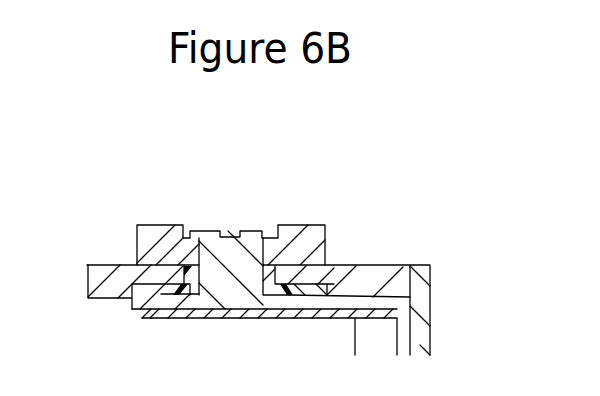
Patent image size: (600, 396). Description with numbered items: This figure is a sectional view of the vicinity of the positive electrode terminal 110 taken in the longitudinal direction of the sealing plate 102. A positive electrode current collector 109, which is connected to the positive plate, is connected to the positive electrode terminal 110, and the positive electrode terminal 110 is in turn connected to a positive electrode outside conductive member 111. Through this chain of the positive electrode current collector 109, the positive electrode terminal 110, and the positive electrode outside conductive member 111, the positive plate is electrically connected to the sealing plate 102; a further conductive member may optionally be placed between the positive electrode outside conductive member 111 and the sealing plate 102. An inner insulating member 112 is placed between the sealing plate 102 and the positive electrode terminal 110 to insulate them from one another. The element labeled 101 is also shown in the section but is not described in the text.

The substrate 101 is at (421, 336).
The sealing plate 102 is at (377, 282).
The positive electrode current collector 109 is at (397, 311).
The positive electrode terminal 110 is at (232, 261).
The positive electrode outside conductive member 111 is at (305, 240).
The inner insulating member 112 is at (327, 294).